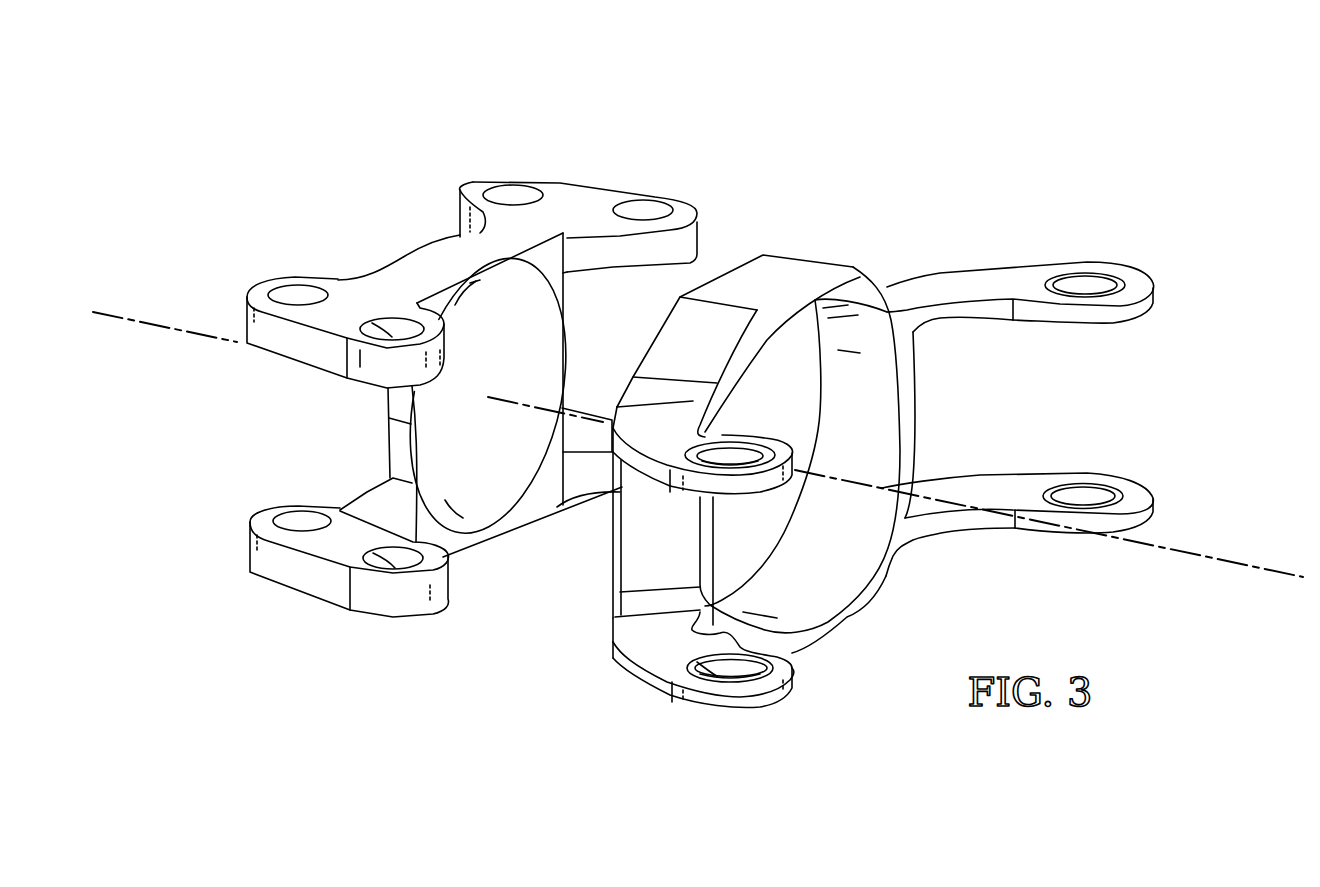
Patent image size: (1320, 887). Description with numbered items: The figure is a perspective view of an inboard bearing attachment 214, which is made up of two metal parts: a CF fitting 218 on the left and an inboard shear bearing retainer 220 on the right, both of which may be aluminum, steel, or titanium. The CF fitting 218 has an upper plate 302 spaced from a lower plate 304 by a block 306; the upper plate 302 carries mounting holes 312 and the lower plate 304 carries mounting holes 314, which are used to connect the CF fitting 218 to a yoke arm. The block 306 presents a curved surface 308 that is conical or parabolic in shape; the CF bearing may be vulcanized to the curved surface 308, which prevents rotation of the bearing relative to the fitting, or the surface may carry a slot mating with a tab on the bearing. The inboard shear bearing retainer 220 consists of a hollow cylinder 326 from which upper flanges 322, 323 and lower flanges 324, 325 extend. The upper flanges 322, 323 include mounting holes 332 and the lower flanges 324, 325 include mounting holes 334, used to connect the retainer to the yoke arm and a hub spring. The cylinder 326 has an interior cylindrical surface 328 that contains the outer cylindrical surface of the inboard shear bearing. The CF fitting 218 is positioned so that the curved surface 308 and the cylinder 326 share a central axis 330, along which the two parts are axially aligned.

The inboard bearing attachment 214 is at (933, 80).
The CF fitting 218 is at (580, 193).
The inboard shear bearing retainer 220 is at (950, 283).
The upper plate 302 is at (433, 258).
The lower plate 304 is at (285, 573).
The block 306 is at (393, 427).
The curved surface 308 is at (483, 503).
The mounting holes 312 is at (497, 188).
The mounting holes 314 is at (290, 523).
The upper flange 322 is at (733, 500).
The upper flange 323 is at (1153, 293).
The lower flange 324 is at (710, 707).
The lower flange 325 is at (1153, 503).
The cylinder 326 is at (803, 270).
The interior cylindrical surface 328 is at (837, 567).
The central axis 330 is at (1273, 567).
The mounting holes 332 is at (1080, 283).
The mounting holes 334 is at (1082, 492).